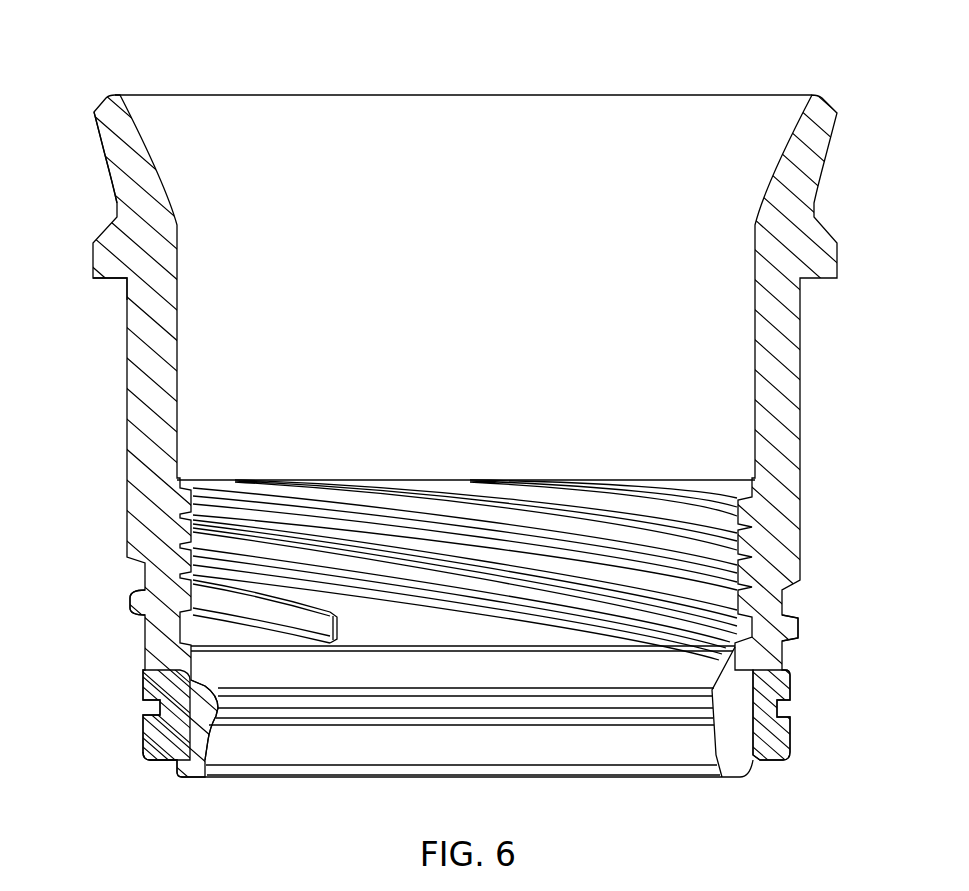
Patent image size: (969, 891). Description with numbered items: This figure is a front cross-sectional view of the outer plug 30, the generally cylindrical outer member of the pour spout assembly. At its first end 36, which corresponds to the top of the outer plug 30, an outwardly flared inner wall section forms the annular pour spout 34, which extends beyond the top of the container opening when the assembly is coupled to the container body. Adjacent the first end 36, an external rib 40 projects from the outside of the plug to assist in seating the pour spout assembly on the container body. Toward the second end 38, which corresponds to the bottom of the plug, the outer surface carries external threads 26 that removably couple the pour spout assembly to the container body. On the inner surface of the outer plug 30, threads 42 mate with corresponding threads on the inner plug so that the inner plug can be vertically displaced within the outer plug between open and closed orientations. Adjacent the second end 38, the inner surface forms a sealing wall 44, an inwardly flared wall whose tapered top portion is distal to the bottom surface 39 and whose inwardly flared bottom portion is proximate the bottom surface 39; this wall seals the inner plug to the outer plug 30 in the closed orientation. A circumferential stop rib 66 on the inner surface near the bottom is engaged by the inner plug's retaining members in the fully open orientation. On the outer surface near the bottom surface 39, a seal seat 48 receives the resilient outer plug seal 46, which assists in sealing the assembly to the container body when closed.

The outer plug 30 is at (484, 419).
The annular pour spout 34 is at (130, 103).
The first end 36 is at (102, 160).
The external rib 40 is at (113, 282).
The threads 42 is at (187, 500).
The second end 38 is at (140, 637).
The seal seat 48 is at (180, 684).
The sealing wall 44 is at (165, 757).
The stop rib 66 is at (213, 714).
The bottom surface 39 is at (605, 782).
The outer plug seal 46 is at (770, 740).
The external threads 26 is at (796, 620).